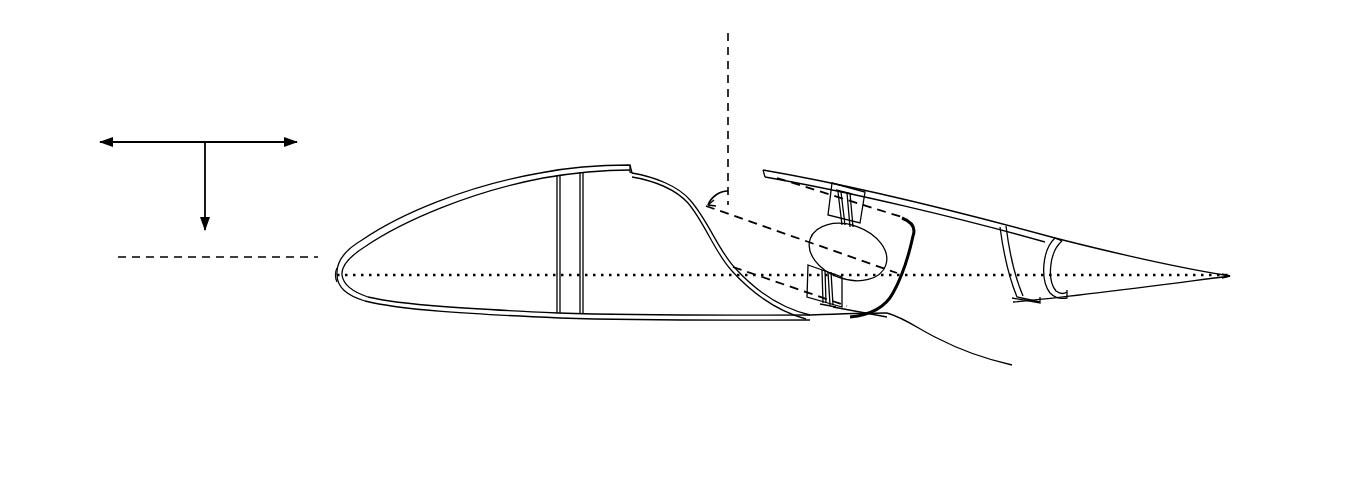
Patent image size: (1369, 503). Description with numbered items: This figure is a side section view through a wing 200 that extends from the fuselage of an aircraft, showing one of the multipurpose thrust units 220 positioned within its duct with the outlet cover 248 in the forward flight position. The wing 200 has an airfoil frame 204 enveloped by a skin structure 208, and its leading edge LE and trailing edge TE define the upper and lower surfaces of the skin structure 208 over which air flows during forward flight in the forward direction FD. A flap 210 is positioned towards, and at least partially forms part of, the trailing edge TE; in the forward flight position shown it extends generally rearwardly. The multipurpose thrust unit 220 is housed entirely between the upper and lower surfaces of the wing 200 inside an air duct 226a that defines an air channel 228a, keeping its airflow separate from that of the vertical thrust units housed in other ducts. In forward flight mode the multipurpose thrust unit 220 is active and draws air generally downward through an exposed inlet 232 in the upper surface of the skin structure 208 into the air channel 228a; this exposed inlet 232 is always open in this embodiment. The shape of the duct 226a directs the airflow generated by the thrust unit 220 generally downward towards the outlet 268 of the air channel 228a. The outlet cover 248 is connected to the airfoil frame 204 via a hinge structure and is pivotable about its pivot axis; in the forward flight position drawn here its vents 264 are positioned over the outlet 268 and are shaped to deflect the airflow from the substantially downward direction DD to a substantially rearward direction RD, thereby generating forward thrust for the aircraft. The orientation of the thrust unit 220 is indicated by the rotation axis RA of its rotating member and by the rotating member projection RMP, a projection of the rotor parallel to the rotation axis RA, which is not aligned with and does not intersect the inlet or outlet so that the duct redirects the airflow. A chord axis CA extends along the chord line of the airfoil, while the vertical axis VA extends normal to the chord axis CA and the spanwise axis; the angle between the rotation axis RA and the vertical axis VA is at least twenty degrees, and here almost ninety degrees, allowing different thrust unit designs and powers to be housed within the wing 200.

The wing 200 is at (332, 103).
The airfoil frame 204 is at (568, 284).
The skin structure 208 is at (562, 171).
The flap 210 is at (1130, 276).
The multipurpose thrust unit 220 is at (838, 216).
The air duct 226a is at (703, 231).
The air channel 228a is at (787, 220).
The exposed inlet 232 is at (676, 171).
The outlet cover 248 is at (936, 339).
The vent 264 is at (947, 347).
The outlet 268 is at (993, 306).
The forward direction FD is at (146, 124).
The rearward direction RD is at (260, 124).
The downward direction DD is at (231, 186).
The longitudinal axis LA is at (188, 258).
The leading edge LE is at (332, 272).
The trailing edge TE is at (1236, 276).
The vertical axis VA is at (728, 52).
The rotation axis RA is at (847, 252).
The rotating member projection RMP is at (897, 275).
The chord axis CA is at (1073, 275).